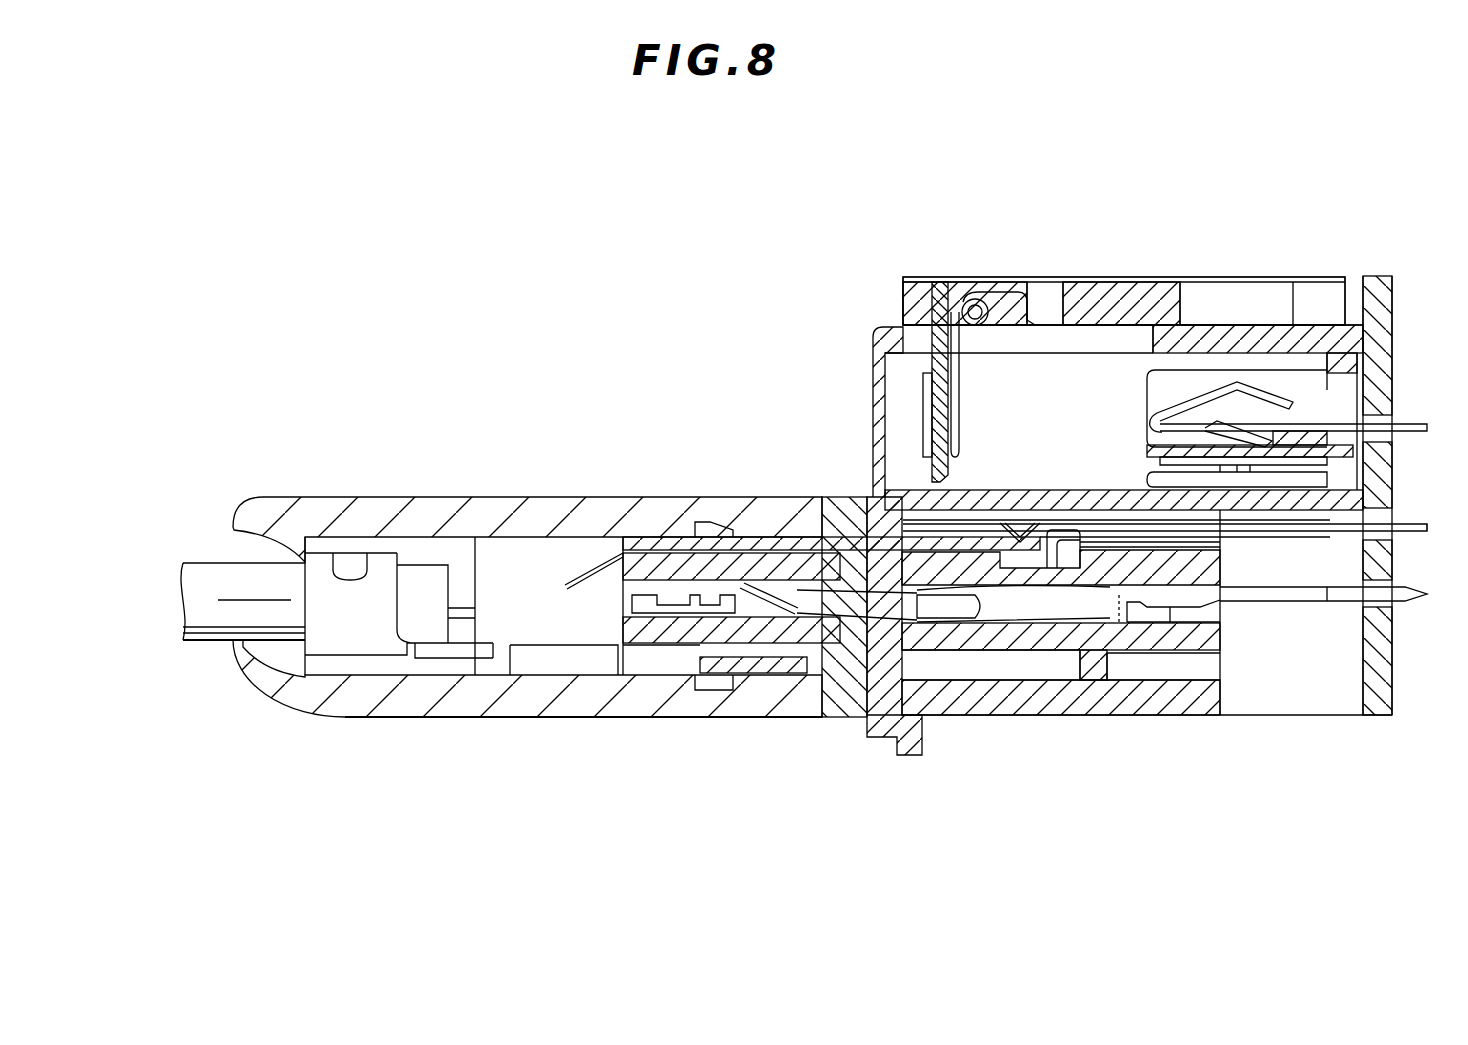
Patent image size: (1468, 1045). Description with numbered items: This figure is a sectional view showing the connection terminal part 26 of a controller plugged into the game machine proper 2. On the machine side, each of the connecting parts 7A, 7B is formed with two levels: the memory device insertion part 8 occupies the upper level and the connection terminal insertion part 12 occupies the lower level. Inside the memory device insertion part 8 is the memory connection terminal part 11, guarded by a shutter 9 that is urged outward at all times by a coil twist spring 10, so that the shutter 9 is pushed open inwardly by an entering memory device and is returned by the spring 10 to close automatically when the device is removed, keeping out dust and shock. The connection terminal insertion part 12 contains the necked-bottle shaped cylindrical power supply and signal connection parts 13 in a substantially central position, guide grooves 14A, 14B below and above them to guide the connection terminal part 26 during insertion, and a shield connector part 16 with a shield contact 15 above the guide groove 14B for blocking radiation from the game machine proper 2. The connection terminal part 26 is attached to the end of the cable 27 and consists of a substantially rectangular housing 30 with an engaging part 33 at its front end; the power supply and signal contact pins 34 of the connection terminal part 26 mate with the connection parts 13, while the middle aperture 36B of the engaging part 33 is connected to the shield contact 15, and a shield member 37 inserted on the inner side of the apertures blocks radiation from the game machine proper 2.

The game machine proper 2 is at (1166, 222).
The connecting part 7A is at (911, 258).
The connecting part 7B is at (1124, 301).
The memory device insertion part 8 is at (852, 380).
The shutter 9 is at (948, 292).
The coil twist spring 10 is at (990, 290).
The memory connection terminal part 11 is at (1330, 400).
The connection terminal insertion part 12 is at (876, 752).
The power supply and signal connection parts 13 is at (1112, 612).
The guide groove 14A is at (1060, 690).
The guide groove 14B is at (1100, 545).
The shield contact 15 is at (1060, 545).
The shield connector part 16 is at (1310, 532).
The connection terminal part 26 is at (450, 488).
The cable 27 is at (238, 643).
The housing 30 is at (595, 702).
The engaging part 33 is at (830, 720).
The power supply and signal contact pins 34 is at (793, 600).
The aperture 36B is at (1010, 545).
The shield member 37 is at (963, 545).